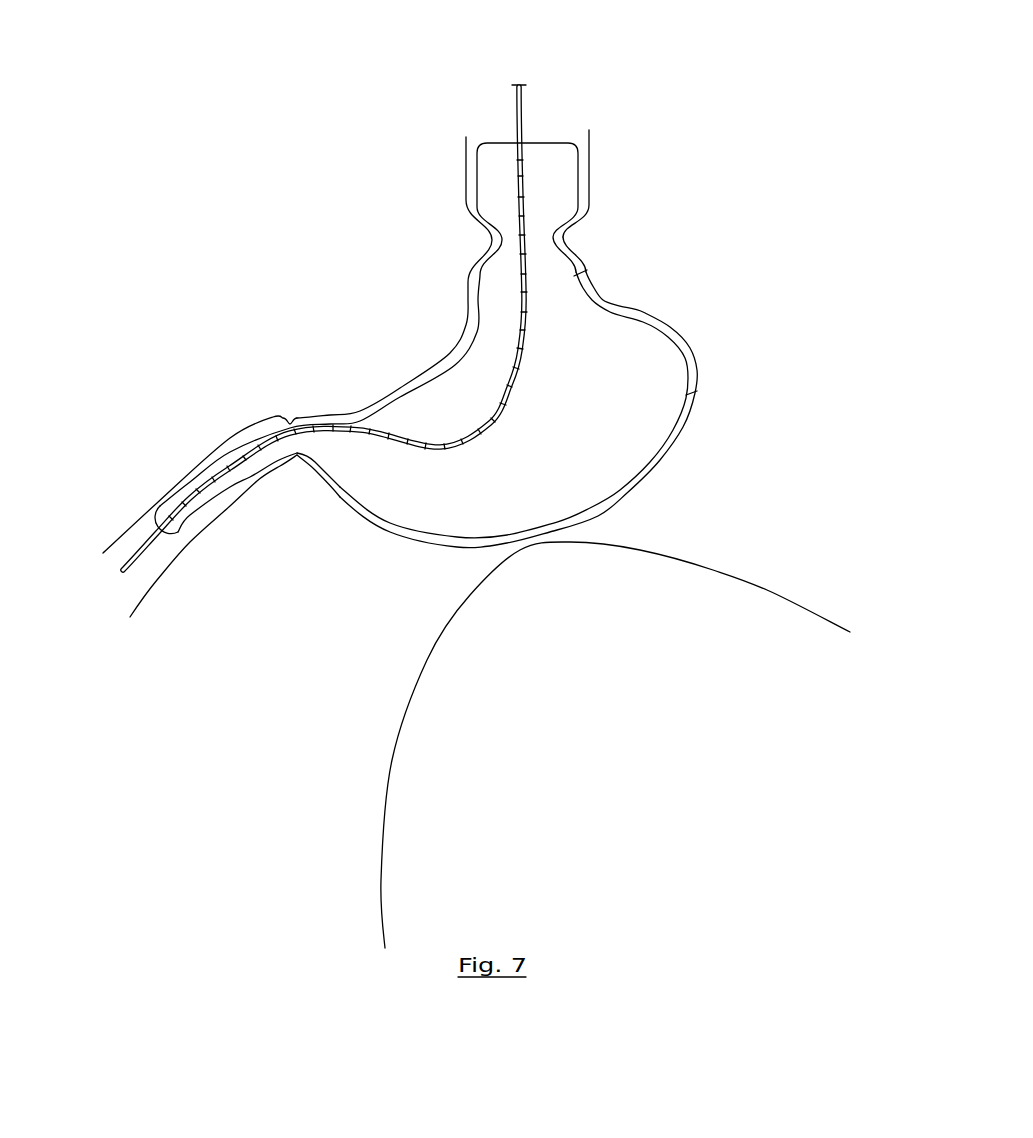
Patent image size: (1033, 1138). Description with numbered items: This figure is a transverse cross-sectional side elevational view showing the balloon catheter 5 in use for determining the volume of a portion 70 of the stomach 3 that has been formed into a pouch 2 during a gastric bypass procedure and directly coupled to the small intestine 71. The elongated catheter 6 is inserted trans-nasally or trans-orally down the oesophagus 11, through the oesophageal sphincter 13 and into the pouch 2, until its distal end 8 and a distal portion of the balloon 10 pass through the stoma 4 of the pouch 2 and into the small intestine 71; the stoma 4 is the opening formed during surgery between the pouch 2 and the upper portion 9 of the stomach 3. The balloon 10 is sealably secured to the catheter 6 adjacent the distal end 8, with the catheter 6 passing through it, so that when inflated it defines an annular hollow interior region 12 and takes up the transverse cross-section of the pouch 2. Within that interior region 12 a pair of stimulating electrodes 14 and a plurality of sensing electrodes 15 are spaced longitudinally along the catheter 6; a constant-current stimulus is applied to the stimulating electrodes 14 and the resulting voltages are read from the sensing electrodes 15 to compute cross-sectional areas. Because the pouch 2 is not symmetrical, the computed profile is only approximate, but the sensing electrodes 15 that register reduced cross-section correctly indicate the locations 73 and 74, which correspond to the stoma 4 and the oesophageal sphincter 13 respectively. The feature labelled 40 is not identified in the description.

The pouch 2 is at (670, 320).
The stomach 3 is at (700, 597).
The stoma 4 is at (290, 423).
The balloon catheter 5 is at (541, 101).
The catheter 6 is at (525, 133).
The distal end 8 is at (122, 573).
The upper portion of the stomach 9 is at (638, 550).
The balloon 10 is at (580, 272).
The oesophagus 11 is at (590, 198).
The annular hollow interior region 12 is at (638, 419).
The oesophageal sphincter 13 is at (563, 240).
The stimulating electrodes 14 is at (523, 160).
The sensing electrodes 15 is at (528, 182).
The stomach wall 40 is at (693, 345).
The portion of the stomach 70 is at (690, 393).
The small intestine 71 is at (185, 550).
The location of reduced transverse cross-section 73 is at (297, 460).
The location of reduced transverse cross-section 74 is at (496, 239).